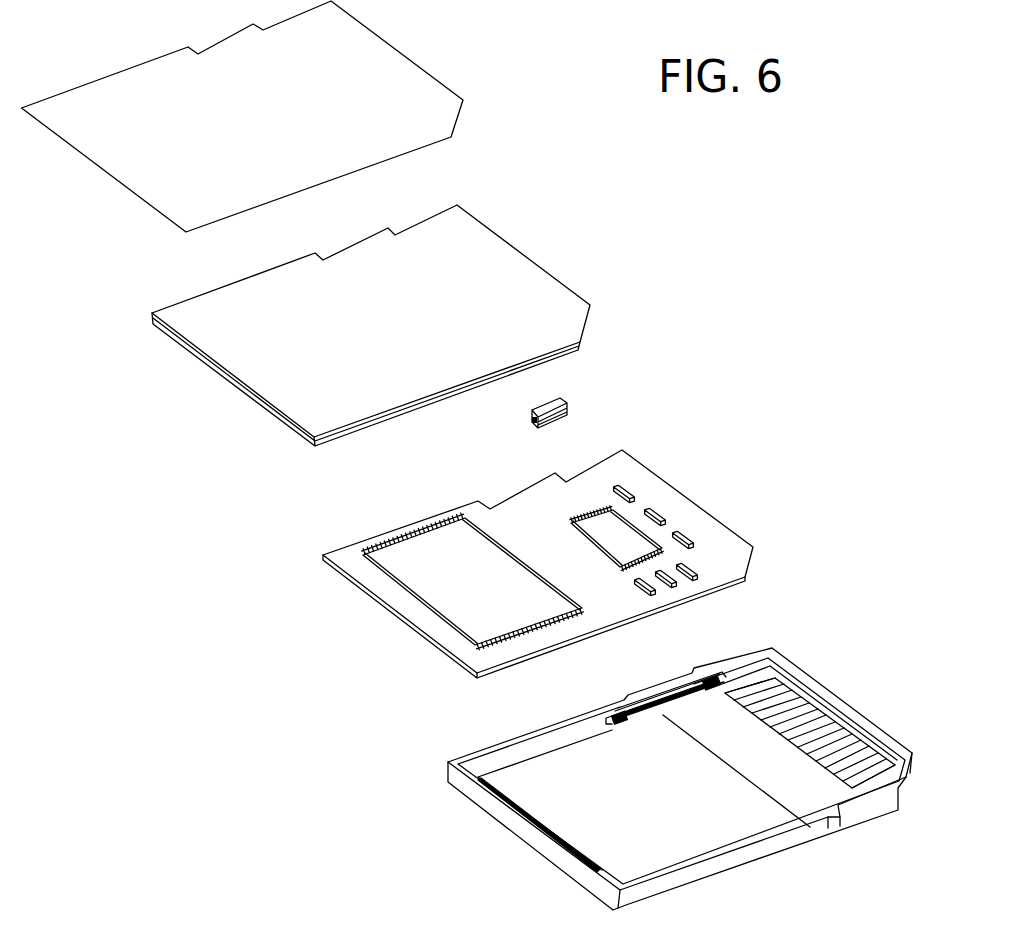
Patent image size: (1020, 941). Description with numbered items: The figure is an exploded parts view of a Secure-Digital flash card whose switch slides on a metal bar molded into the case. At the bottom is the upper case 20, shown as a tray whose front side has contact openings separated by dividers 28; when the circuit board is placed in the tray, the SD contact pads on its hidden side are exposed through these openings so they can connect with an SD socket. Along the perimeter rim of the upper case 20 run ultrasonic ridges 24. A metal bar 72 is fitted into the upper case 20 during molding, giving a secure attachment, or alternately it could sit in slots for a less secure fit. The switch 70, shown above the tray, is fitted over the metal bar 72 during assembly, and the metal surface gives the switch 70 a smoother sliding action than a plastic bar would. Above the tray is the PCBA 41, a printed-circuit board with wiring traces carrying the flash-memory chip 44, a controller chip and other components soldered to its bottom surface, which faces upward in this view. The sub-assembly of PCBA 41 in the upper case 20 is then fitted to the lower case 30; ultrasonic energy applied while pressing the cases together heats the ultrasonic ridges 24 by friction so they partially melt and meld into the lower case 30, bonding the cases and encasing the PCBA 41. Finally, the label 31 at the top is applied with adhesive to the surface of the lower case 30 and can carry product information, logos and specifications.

The upper case 20 is at (680, 746).
The ultrasonic ridges 24 is at (550, 840).
The dividers 28 is at (787, 703).
The lower case 30 is at (398, 336).
The label 31 is at (278, 134).
The PCBA 41 is at (557, 546).
The flash-memory chip 44 is at (487, 589).
The switch 70 is at (532, 428).
The metal bar 72 is at (667, 697).